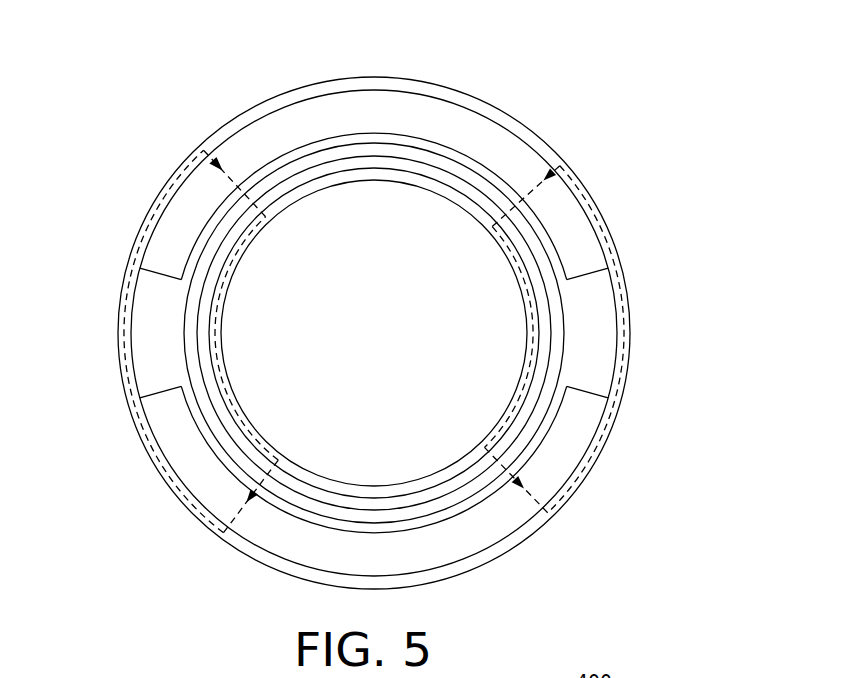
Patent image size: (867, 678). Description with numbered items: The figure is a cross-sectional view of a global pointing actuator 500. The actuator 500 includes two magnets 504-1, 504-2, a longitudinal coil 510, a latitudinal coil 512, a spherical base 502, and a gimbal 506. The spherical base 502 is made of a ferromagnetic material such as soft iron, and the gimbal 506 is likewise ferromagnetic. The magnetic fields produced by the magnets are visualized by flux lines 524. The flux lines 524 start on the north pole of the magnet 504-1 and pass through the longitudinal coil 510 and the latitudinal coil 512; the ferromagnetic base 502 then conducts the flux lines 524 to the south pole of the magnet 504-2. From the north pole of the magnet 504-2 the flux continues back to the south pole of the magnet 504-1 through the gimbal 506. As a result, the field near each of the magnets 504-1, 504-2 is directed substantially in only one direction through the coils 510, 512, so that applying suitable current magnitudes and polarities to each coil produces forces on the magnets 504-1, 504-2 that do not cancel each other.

The global pointing actuator 500 is at (483, 72).
The spherical base 502 is at (236, 418).
The magnet 504-1 is at (250, 157).
The magnet 504-2 is at (493, 525).
The gimbal 506 is at (587, 175).
The longitudinal coil 510 is at (201, 348).
The latitudinal coil 512 is at (564, 269).
The flux lines 524 is at (125, 332).